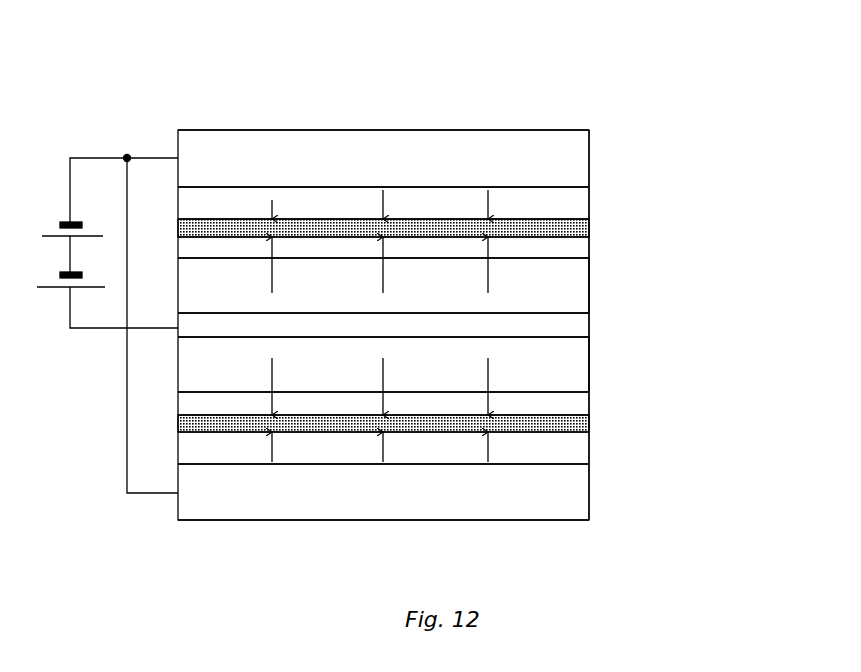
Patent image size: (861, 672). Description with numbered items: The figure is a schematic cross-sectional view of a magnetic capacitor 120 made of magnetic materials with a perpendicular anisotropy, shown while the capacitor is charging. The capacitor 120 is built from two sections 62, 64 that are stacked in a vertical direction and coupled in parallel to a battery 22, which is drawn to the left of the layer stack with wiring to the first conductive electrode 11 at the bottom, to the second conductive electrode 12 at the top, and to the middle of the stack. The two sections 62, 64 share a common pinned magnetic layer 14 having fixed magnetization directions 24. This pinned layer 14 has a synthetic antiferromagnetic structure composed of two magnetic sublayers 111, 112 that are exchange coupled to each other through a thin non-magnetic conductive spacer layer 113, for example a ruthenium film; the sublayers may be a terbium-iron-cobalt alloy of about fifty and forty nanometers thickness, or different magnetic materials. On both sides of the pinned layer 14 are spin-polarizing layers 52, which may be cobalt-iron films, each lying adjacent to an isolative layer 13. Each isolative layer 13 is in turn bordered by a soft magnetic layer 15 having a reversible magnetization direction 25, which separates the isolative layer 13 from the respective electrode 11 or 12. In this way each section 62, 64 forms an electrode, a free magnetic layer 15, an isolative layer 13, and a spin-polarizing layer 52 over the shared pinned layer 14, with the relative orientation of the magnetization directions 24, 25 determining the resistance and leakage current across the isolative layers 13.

The magnetic capacitor 120 is at (614, 112).
The first conductive electrode 11 is at (589, 493).
The second conductive electrode 12 is at (589, 155).
The isolative layer 13 is at (589, 227).
The magnetic layer 15 is at (589, 198).
The spin-polarizing layer 52 is at (589, 248).
The pinned magnetic layer 14 is at (713, 261).
The magnetic sublayer 111 is at (589, 370).
The magnetic sublayer 112 is at (589, 285).
The non-magnetic conductive spacer layer 113 is at (589, 327).
The section 62 is at (795, 520).
The section 64 is at (795, 317).
The battery 22 is at (62, 218).
The fixed magnetization direction 24 is at (485, 260).
The reversible magnetization direction 25 is at (272, 200).